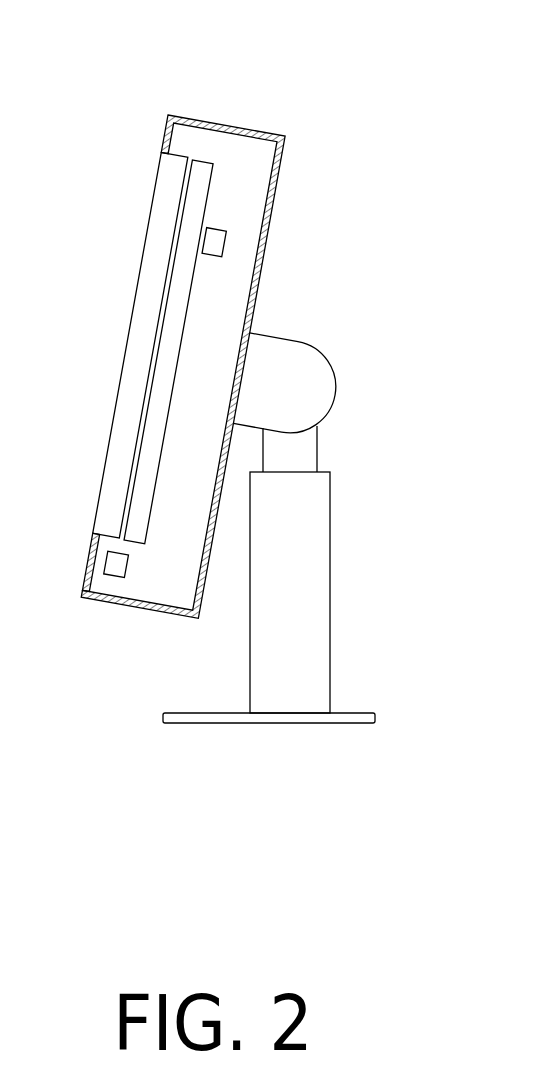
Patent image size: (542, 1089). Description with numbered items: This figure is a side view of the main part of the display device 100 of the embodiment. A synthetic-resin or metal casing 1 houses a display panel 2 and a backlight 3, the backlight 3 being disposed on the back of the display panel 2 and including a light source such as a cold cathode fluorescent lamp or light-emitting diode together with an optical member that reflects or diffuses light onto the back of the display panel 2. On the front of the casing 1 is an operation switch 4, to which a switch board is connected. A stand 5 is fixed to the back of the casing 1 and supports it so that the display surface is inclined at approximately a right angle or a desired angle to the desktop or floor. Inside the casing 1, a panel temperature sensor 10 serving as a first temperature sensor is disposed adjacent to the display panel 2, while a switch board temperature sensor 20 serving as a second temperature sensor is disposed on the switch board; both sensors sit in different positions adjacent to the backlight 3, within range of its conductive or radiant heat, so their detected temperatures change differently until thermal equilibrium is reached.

The display device 100 is at (432, 42).
The casing 1 is at (231, 123).
The display panel 2 is at (140, 275).
The backlight 3 is at (197, 192).
The operation switch 4 is at (92, 560).
The stand 5 is at (330, 621).
The panel temperature sensor 10 is at (222, 237).
The switch board temperature sensor 20 is at (115, 570).